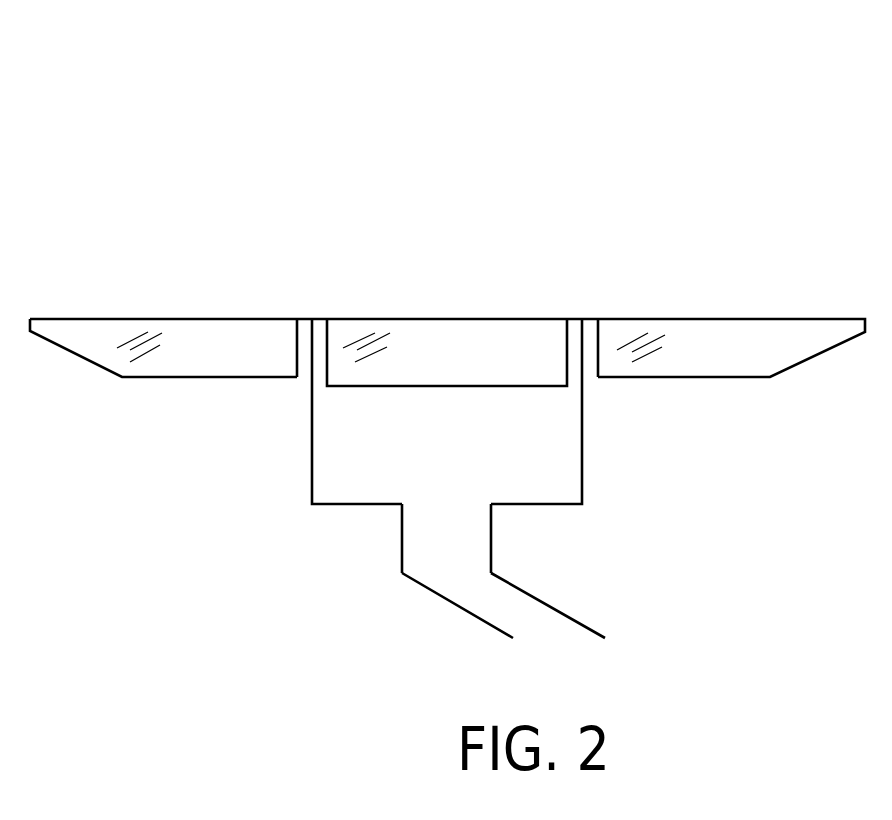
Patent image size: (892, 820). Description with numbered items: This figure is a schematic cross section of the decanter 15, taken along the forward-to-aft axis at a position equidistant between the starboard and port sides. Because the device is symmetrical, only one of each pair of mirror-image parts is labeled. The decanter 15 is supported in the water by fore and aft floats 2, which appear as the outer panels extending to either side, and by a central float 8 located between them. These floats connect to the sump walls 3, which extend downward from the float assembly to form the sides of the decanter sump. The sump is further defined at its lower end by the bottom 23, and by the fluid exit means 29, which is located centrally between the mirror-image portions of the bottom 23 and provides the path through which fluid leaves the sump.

The decanter 15 is at (432, 165).
The fore and aft floats 2 is at (678, 345).
The central float 8 is at (510, 334).
The sump walls 3 is at (583, 407).
The fluid exit means 29 is at (447, 513).
The bottom 23 is at (541, 505).